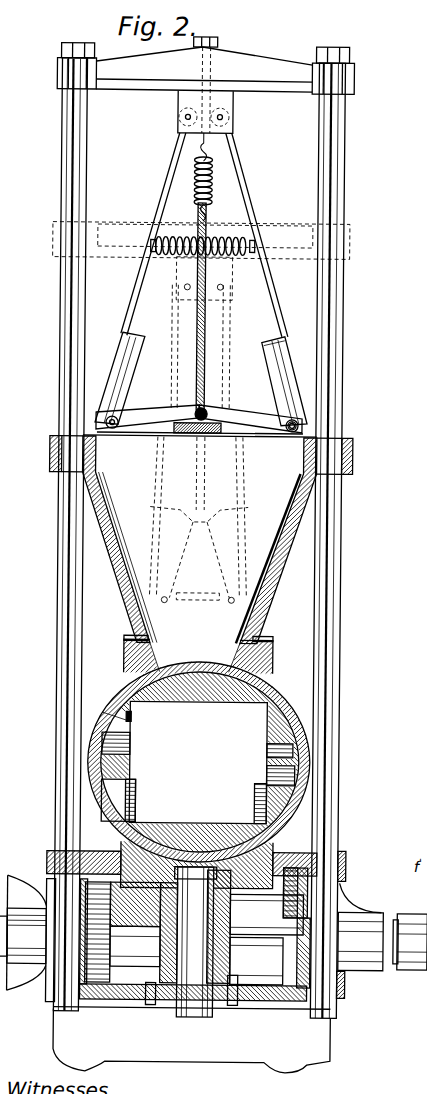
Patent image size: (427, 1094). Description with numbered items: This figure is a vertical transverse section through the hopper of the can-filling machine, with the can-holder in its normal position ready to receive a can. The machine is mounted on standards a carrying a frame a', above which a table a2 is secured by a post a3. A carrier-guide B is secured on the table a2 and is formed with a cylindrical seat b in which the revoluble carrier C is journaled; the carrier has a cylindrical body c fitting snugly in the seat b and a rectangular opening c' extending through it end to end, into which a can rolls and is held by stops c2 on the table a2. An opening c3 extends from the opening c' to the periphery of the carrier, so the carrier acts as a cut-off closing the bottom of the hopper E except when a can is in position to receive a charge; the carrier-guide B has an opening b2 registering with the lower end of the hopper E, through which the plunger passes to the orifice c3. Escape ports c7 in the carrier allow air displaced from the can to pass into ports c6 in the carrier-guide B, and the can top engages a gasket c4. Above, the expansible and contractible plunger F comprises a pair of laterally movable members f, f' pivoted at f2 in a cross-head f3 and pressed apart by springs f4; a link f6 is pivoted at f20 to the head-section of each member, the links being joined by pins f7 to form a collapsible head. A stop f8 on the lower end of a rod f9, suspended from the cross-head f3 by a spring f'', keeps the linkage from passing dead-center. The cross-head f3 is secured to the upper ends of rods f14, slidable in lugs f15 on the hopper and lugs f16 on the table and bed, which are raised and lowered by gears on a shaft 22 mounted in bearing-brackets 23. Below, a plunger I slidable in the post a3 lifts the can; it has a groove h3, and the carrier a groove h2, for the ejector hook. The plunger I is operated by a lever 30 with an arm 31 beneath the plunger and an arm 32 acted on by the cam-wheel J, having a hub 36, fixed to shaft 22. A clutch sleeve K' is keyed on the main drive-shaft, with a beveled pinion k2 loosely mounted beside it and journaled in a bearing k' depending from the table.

The plunger rods f14 is at (58, 313).
The cross-head f3 is at (204, 85).
The pivot f2 is at (181, 118).
The spring f'' is at (235, 177).
The plunger F is at (201, 282).
The plunger-member f' is at (312, 355).
The plunger-member f is at (169, 444).
The springs f4 is at (227, 243).
The rod f9 is at (205, 278).
The links f6 is at (150, 437).
The pins f7 is at (207, 410).
The stop f8 is at (209, 437).
The pivot f20 is at (302, 418).
The hopper E is at (296, 508).
The lugs f15 is at (49, 448).
The opening b2 is at (242, 641).
The ports c6 is at (126, 660).
The carrier-guide B is at (285, 697).
The escape ports c7 is at (119, 707).
The package-holder or carrier C is at (198, 762).
The gasket c4 is at (134, 718).
The opening c3 is at (110, 740).
The stops c2 is at (137, 808).
The rectangular opening c' is at (221, 786).
The cylindrical body c is at (163, 810).
The cylindrical seat b is at (285, 719).
The groove h2 is at (283, 753).
The groove h3 is at (114, 838).
The table a2 is at (293, 851).
The cam-wheel J is at (346, 900).
The lugs f16 is at (349, 862).
The arm 31 is at (196, 1017).
The clutch sleeve K' is at (103, 963).
The post a3 is at (157, 957).
The beveled pinion k2 is at (57, 973).
The shaft 22 is at (266, 914).
The lever 30 is at (256, 961).
The frame a' is at (344, 967).
The standards a is at (277, 1049).
The arm 32 is at (294, 1000).
The plunger I is at (258, 1003).
The bearing-brackets 23 is at (360, 917).
The bearings k' is at (383, 1021).
The hub 36 is at (265, 985).